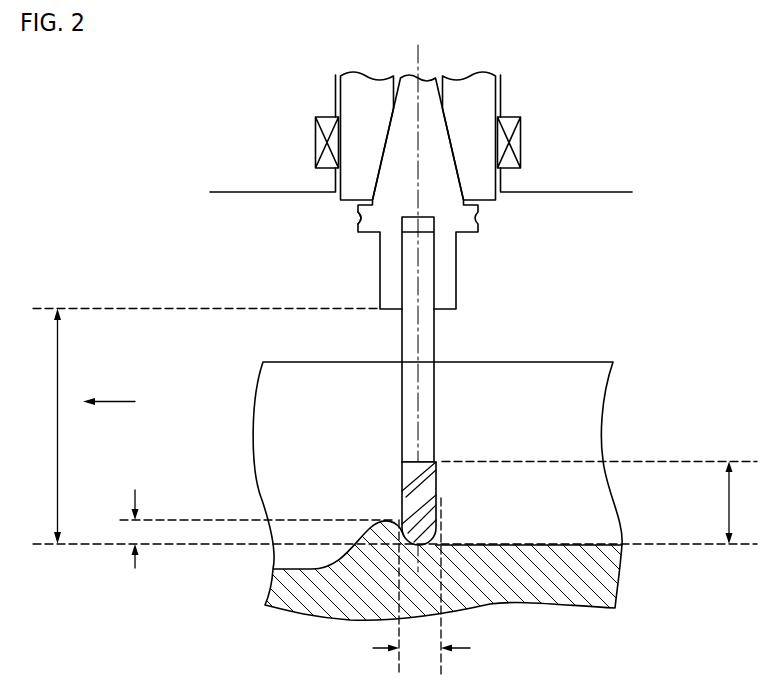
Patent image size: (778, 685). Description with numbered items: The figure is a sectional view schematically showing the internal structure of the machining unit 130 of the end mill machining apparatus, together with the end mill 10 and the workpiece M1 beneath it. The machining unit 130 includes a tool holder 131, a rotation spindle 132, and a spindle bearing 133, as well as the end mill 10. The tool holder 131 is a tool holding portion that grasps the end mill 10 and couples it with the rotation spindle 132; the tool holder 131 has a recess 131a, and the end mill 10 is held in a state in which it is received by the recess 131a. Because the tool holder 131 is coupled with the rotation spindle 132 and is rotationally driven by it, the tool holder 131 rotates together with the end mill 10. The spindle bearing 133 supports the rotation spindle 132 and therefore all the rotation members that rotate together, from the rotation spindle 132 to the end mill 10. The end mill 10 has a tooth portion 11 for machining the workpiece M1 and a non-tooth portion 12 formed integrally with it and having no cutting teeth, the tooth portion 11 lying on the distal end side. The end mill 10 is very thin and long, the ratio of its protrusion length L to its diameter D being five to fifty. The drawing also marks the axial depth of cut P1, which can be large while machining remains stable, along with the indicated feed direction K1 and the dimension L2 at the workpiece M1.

The end mill 10 is at (369, 381).
The tooth portion 11 is at (395, 503).
The non-tooth portion 12 is at (410, 391).
The machining unit 130 is at (258, 184).
The tool holder 131 is at (424, 86).
The recess 131a is at (400, 224).
The rotation spindle 132 is at (468, 85).
The spindle bearing 133 is at (318, 142).
The workpiece M1 is at (600, 373).
The protrusion length L is at (394, 427).
The feed direction K1 is at (109, 387).
The axial depth of cut P1 is at (251, 529).
The cutting depth L2 is at (600, 503).
The diameter D is at (421, 591).